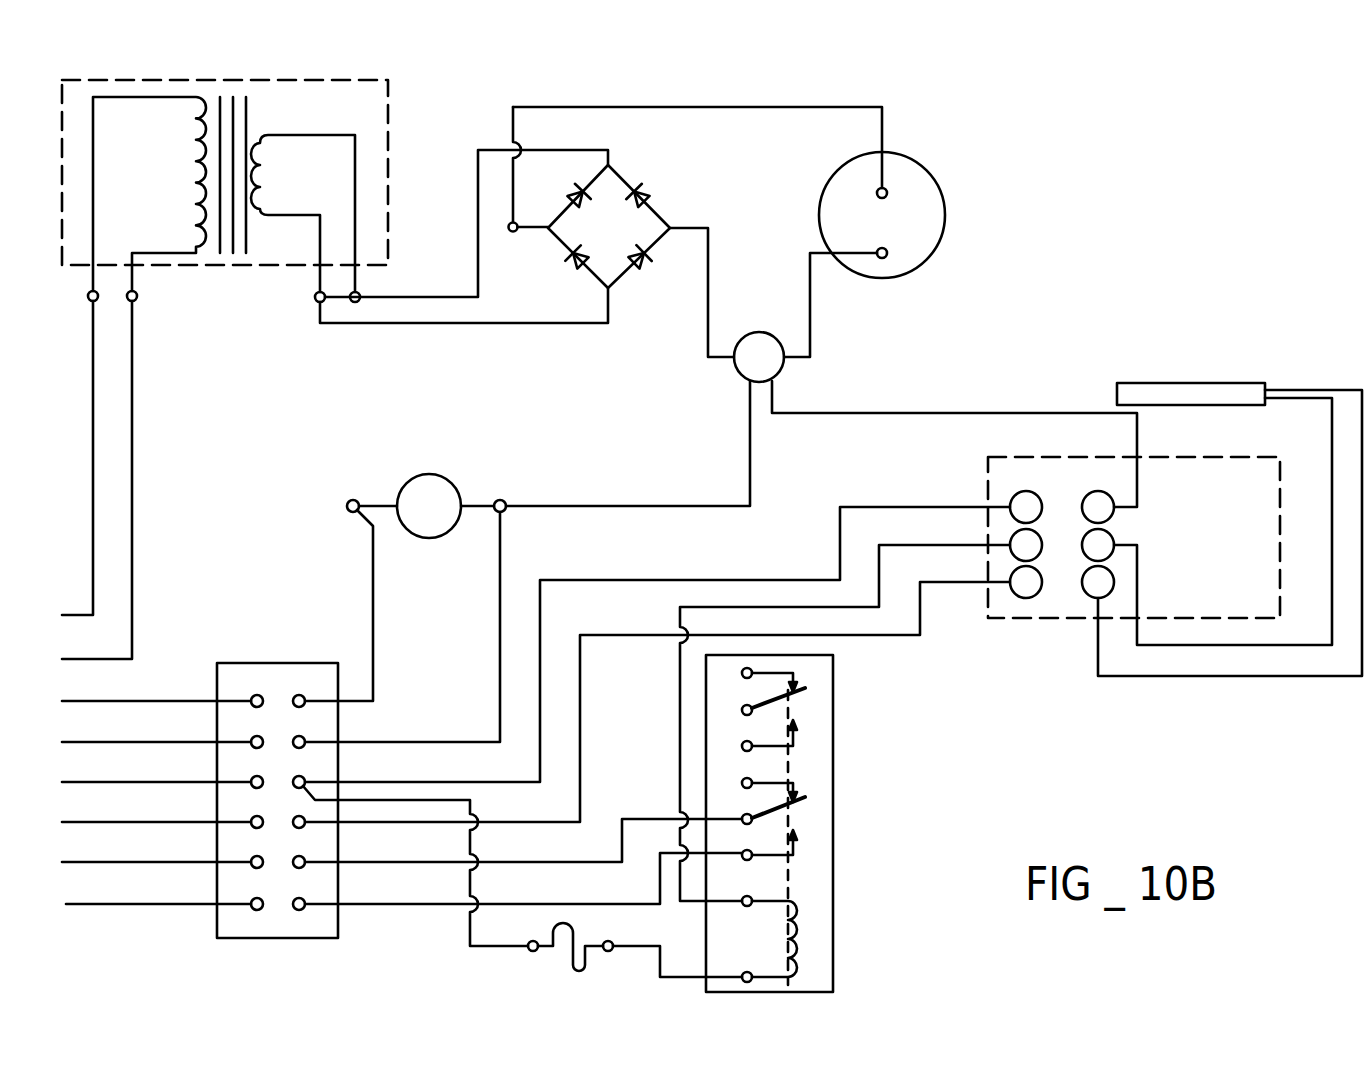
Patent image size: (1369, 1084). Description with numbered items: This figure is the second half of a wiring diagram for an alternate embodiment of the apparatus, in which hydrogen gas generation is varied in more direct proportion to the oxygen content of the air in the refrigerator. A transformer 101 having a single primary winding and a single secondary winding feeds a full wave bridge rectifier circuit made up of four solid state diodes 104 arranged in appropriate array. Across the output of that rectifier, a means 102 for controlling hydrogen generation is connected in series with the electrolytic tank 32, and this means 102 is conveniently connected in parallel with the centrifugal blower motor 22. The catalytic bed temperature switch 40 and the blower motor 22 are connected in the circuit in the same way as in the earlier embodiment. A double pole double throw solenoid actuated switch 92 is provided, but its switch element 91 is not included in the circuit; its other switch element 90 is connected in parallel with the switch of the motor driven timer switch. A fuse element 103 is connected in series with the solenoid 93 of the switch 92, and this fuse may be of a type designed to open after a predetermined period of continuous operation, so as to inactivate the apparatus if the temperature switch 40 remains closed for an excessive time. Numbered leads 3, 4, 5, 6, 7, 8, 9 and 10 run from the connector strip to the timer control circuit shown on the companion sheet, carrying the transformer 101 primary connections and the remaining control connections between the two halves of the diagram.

The transformer 101 is at (388, 115).
The solid state diodes 104 is at (575, 184).
The electrolytic tank 32 is at (917, 268).
The means for controlling hydrogen generation 102 is at (759, 332).
The catalytic bed temperature switch 40 is at (1178, 383).
The centrifugal blower motor 22 is at (430, 538).
The terminal lead 3 is at (66, 466).
The terminal lead 4 is at (86, 488).
The terminal lead 5 is at (172, 702).
The terminal lead 6 is at (172, 743).
The terminal lead 7 is at (172, 782).
The terminal lead 8 is at (172, 822).
The terminal lead 9 is at (172, 863).
The terminal lead 10 is at (169, 905).
The fuse element 103 is at (565, 963).
The double pole double throw solenoid actuated switch 92 is at (836, 688).
The switch element 91 is at (797, 711).
The switch element 90 is at (803, 812).
The solenoid 93 is at (805, 935).